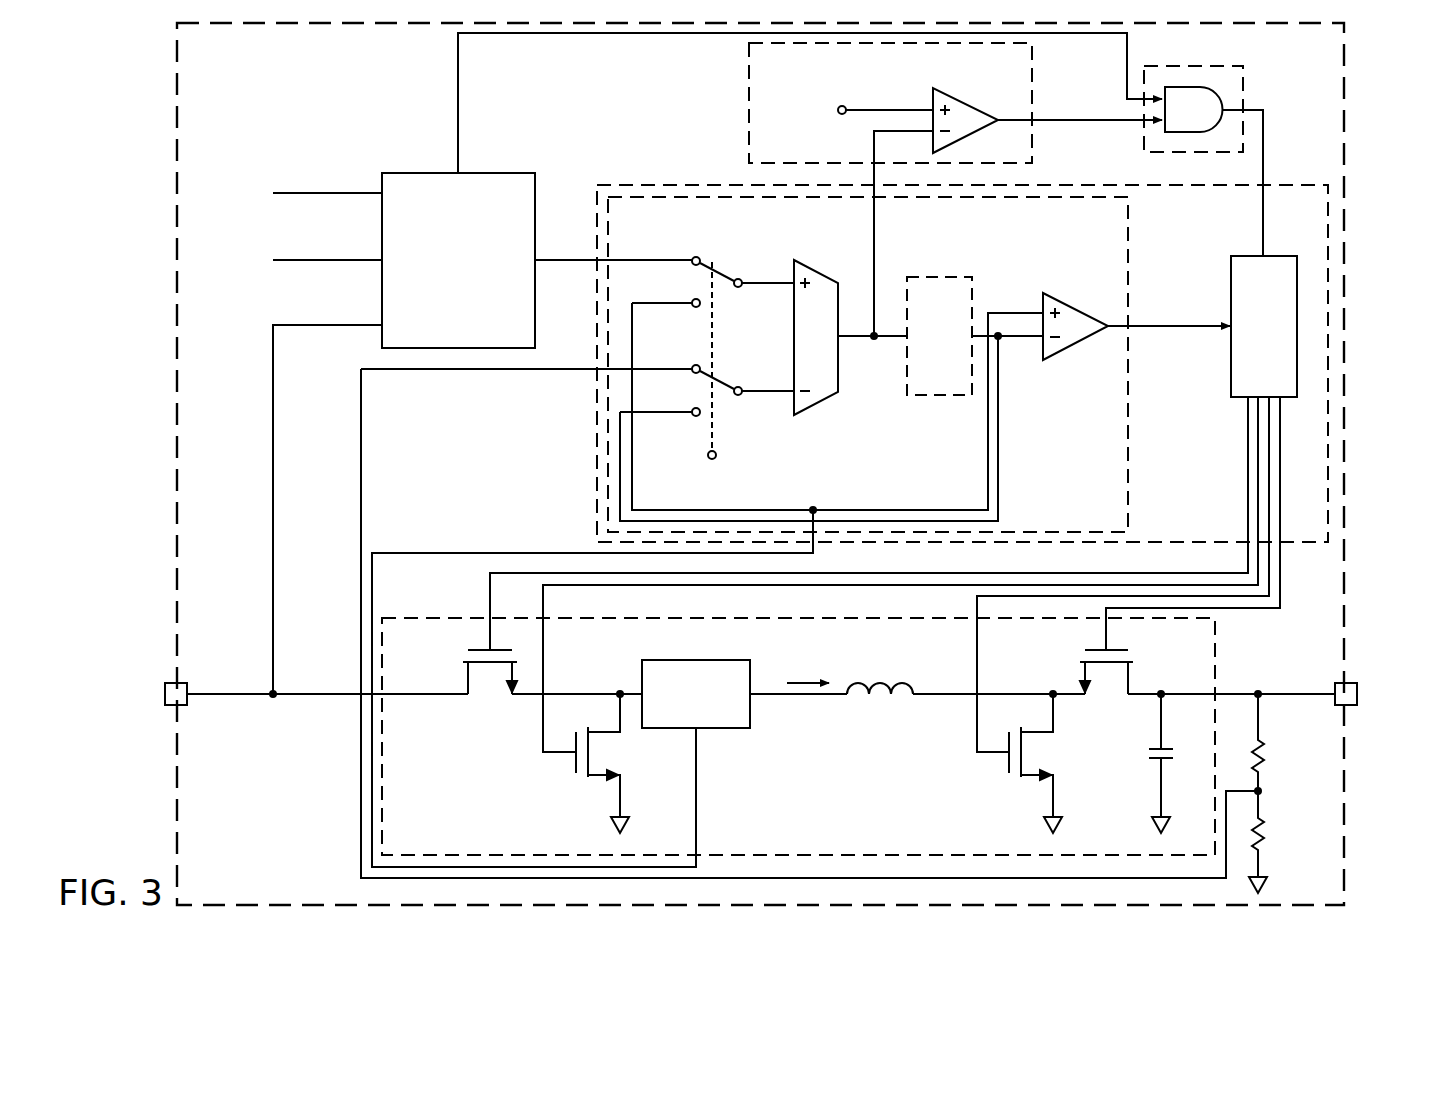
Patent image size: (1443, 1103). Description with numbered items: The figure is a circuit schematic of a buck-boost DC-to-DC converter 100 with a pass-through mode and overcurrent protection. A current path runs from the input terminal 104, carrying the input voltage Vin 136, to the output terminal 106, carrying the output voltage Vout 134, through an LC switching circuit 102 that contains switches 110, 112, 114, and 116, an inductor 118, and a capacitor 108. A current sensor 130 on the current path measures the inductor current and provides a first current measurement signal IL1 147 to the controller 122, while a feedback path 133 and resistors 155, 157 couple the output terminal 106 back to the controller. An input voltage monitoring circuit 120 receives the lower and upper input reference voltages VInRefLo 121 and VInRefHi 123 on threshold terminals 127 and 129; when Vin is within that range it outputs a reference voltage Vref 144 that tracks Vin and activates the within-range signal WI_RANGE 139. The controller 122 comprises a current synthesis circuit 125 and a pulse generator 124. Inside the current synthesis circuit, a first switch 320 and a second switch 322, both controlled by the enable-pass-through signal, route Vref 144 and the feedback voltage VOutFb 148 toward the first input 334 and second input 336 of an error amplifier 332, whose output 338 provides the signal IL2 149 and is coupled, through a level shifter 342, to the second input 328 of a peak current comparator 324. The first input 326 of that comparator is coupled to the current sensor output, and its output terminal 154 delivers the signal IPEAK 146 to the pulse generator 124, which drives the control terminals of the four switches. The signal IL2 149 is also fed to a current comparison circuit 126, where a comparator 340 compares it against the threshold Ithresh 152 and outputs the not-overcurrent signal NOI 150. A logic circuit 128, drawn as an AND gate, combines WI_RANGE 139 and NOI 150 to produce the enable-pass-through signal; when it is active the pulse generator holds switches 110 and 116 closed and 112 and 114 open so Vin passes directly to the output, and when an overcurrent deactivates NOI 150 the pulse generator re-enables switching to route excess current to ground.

The DC-to-DC converter 100 is at (176, 145).
The LC switching circuit 102 is at (1217, 648).
The input terminal 104 is at (163, 688).
The output terminal 106 is at (1360, 686).
The capacitor 108 is at (1150, 752).
The switch 110 is at (460, 656).
The switch 112 is at (572, 762).
The switch 114 is at (1010, 776).
The switch 116 is at (1127, 657).
The inductor 118 is at (894, 678).
The input voltage monitoring circuit 120 is at (437, 320).
The lower input reference voltage VInRefLo 121 is at (307, 259).
The controller 122 is at (678, 183).
The upper input reference voltage VInRefHi 123 is at (335, 192).
The pulse generator 124 is at (1272, 255).
The current synthesis circuit 125 is at (1130, 245).
The current comparison circuit 126 is at (748, 78).
The lower input voltage threshold terminal 127 is at (378, 268).
The logic circuit 128 is at (1243, 82).
The upper input voltage threshold terminal 129 is at (378, 201).
The current sensor 130 is at (676, 732).
The feedback path 133 is at (370, 782).
The output voltage Vout 134 is at (1290, 700).
The input voltage Vin 136 is at (232, 700).
The within-range signal WI_RANGE 139 is at (457, 105).
The reference output voltage Vref 144 is at (586, 265).
The signal IPEAK 146 is at (1190, 340).
The first current measurement signal 147 is at (460, 560).
The signal VOutFb 148 is at (360, 528).
The second current measurement signal IL2 149 is at (876, 241).
The not overcurrent signal NOI 150 is at (1073, 122).
The current threshold signal Ithresh 152 is at (892, 109).
The peak current control output terminal 154 is at (1135, 333).
The resistor 155 is at (1266, 760).
The resistor 157 is at (1266, 834).
The first switch 320 is at (732, 277).
The second switch 322 is at (730, 385).
The peak current comparator 324 is at (1075, 303).
The first input 326 is at (1036, 300).
The second input 328 is at (1035, 355).
The error amplifier 332 is at (818, 404).
The first input 334 is at (790, 295).
The second input 336 is at (790, 402).
The output 338 is at (848, 341).
The comparator 340 is at (970, 99).
The level shifter 342 is at (940, 397).